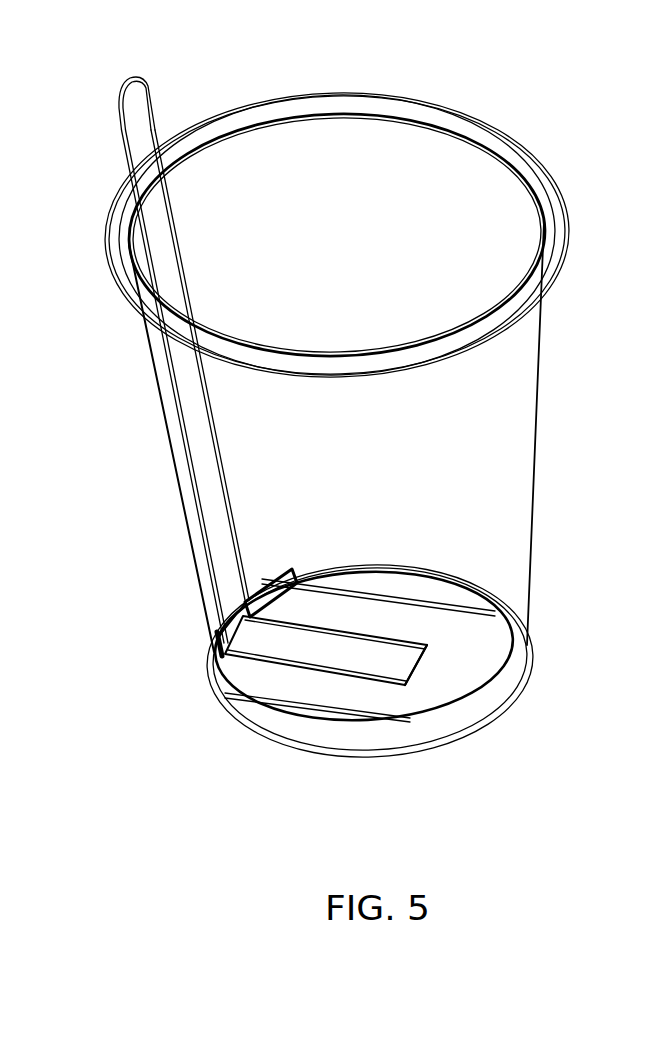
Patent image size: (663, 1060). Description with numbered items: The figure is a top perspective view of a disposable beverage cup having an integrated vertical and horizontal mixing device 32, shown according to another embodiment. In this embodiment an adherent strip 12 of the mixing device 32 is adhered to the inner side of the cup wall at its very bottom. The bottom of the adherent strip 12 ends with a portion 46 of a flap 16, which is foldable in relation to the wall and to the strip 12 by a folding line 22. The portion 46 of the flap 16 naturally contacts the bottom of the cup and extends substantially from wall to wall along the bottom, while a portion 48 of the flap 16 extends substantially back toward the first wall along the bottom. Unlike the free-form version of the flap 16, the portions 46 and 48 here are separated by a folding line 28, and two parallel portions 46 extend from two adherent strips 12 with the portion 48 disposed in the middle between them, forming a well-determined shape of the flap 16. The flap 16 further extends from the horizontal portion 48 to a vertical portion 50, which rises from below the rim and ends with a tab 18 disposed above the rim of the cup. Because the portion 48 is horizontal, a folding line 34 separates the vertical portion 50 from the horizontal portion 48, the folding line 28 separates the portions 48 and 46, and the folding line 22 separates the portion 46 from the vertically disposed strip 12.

The adherent strip 12 is at (273, 588).
The flap 16 is at (291, 464).
The tab 18 is at (145, 117).
The folding line 22 is at (283, 607).
The folding line 28 is at (420, 665).
The mixing device 32 is at (249, 185).
The folding line 34 is at (238, 618).
The portion of flap 46 is at (455, 655).
The portion of flap 48 is at (358, 658).
The vertical portion 50 is at (202, 442).